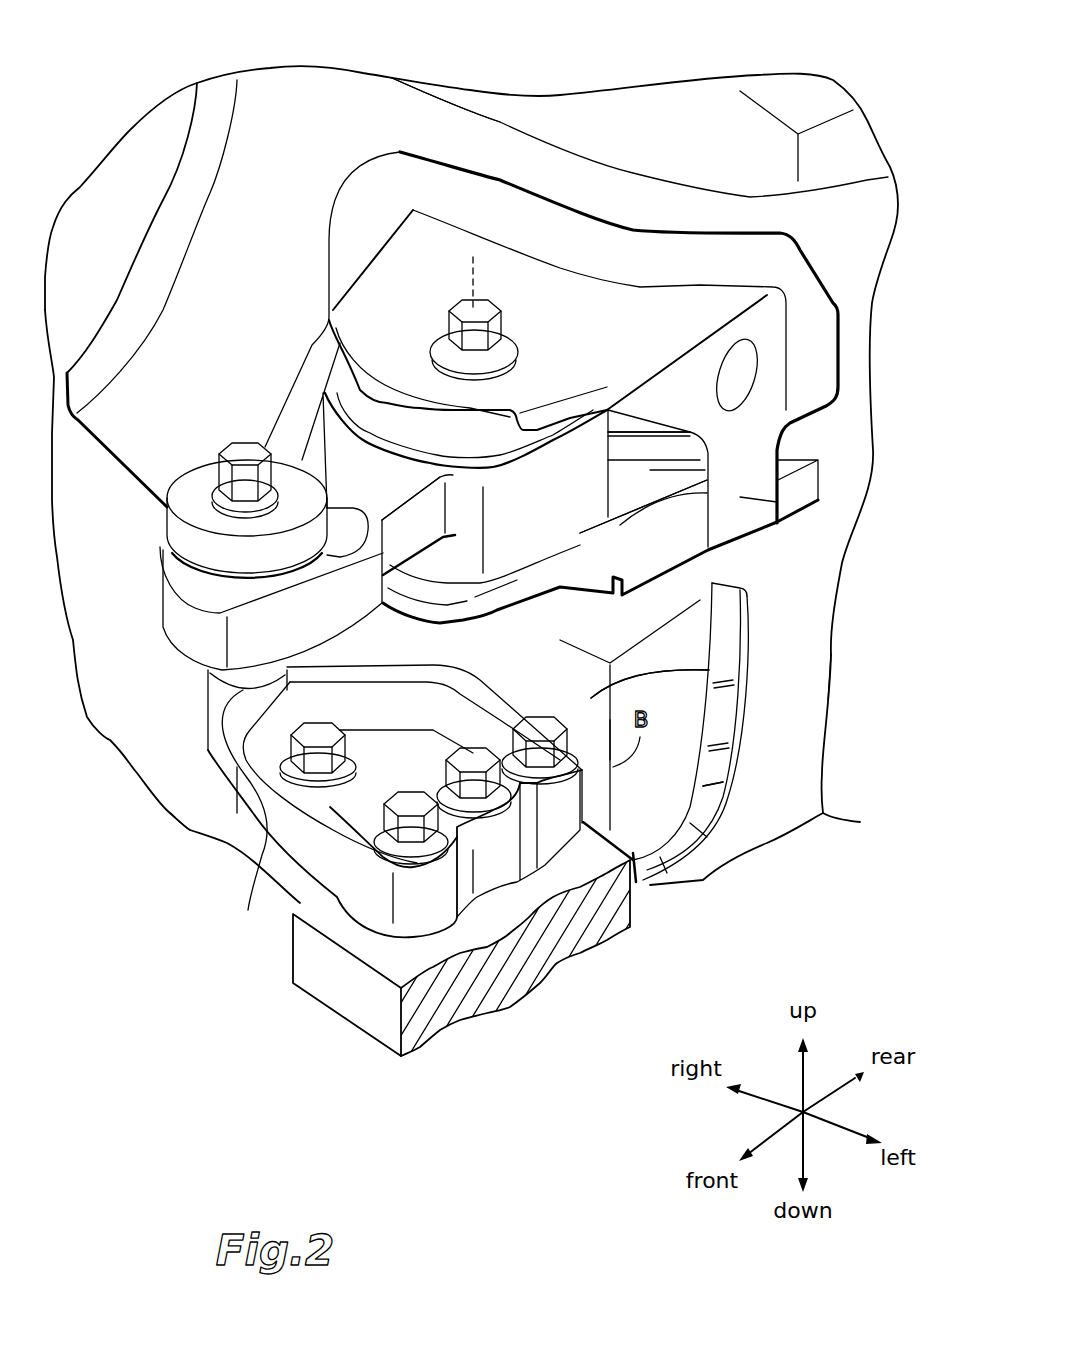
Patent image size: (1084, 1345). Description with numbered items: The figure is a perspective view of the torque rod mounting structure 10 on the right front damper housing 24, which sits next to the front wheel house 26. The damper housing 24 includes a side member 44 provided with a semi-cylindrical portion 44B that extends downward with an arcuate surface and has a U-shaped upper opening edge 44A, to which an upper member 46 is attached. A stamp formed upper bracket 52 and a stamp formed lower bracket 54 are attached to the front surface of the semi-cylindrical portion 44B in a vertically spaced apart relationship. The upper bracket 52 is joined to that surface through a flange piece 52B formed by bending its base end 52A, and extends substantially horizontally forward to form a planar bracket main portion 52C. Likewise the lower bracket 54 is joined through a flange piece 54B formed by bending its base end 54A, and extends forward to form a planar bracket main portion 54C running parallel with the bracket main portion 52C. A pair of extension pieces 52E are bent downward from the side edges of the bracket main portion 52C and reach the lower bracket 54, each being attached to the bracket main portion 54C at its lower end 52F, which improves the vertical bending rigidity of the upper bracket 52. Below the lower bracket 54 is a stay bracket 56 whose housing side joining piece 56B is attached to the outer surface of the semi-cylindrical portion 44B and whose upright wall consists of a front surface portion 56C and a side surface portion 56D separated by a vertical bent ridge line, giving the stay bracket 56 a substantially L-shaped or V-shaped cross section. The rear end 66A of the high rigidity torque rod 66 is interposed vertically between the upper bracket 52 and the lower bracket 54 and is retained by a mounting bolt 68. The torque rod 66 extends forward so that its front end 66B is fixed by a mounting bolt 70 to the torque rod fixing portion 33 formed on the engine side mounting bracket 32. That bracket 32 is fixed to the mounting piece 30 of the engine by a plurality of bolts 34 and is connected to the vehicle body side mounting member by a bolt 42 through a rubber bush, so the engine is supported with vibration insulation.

The torque rod mounting structure 10 is at (370, 472).
The front damper housing 24 is at (637, 84).
The front wheel house 26 is at (117, 730).
The mounting piece 30 is at (352, 1005).
The engine side mounting bracket 32 is at (352, 808).
The torque rod fixing portion 33 is at (187, 827).
The bolts 34 is at (410, 803).
The bolt 42 is at (318, 765).
The side member 44 is at (785, 537).
The upper opening edge 44A is at (523, 123).
The semi-cylindrical portion 44B is at (790, 653).
The upper member 46 is at (569, 109).
The upper bracket 52 is at (610, 495).
The base end 52A is at (700, 260).
The flange piece 52B is at (677, 250).
The bracket main portion 52C is at (603, 260).
The extension pieces 52E is at (763, 450).
The lower end 52F is at (750, 527).
The lower bracket 54 is at (776, 429).
The base end 54A is at (688, 476).
The flange piece 54B is at (640, 442).
The bracket main portion 54C is at (820, 500).
The stay bracket 56 is at (695, 766).
The housing side joining piece 56B is at (710, 763).
The front surface portion 56C is at (740, 673).
The side surface portion 56D is at (683, 720).
The torque rod 66 is at (407, 635).
The rear end 66A is at (590, 517).
The front end 66B is at (150, 628).
The mounting bolt 68 is at (490, 304).
The mounting bolt 70 is at (240, 450).